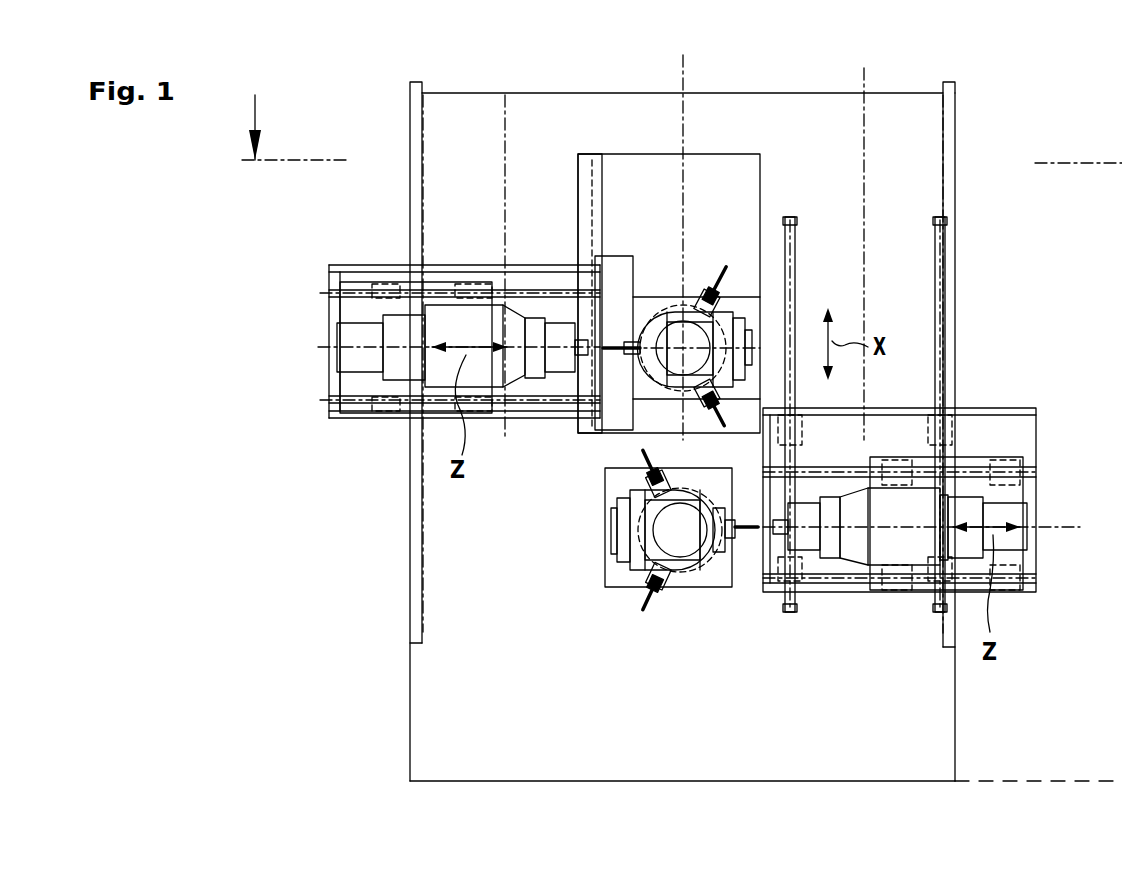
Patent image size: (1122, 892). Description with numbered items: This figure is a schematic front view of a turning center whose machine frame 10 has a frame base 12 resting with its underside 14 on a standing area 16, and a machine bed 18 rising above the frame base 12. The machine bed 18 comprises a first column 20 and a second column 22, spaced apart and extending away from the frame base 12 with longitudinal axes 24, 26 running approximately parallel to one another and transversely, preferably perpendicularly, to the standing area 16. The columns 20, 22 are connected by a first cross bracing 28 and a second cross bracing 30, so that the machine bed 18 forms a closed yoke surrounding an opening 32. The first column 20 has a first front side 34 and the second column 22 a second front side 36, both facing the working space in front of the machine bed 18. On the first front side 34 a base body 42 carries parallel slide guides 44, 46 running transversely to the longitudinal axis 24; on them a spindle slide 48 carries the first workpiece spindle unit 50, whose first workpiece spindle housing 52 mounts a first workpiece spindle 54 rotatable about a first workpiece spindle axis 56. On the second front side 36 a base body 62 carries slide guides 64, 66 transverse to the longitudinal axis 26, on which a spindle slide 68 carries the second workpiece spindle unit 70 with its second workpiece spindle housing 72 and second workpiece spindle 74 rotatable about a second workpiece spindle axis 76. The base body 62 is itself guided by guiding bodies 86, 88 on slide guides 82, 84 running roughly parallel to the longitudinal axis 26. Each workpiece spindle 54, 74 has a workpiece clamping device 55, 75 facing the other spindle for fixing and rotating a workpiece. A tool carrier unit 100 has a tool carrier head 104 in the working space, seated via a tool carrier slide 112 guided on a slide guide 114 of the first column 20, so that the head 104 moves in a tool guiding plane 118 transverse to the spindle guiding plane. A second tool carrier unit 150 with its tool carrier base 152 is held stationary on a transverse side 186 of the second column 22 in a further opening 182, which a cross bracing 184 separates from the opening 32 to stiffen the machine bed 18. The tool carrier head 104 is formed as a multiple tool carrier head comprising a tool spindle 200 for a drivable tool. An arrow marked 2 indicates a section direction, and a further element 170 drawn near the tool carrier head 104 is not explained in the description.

The section line of FIG. 2 is at (291, 127).
The machine frame 10 is at (970, 74).
The frame base 12 is at (930, 712).
The underside 14 is at (905, 783).
The standing area 16 is at (1088, 781).
The machine bed 18 is at (848, 131).
The first column 20 is at (465, 122).
The second column 22 is at (912, 132).
The longitudinal axis 24 is at (505, 153).
The longitudinal axis 26 is at (865, 156).
The first cross bracing 28 is at (658, 615).
The second cross bracing 30 is at (695, 140).
The opening 32 is at (723, 173).
The first front side 34 is at (458, 192).
The second front side 36 is at (925, 193).
The base body 42 is at (337, 278).
The slide guide 44 is at (336, 403).
The slide guide 46 is at (334, 295).
The spindle slide 48 is at (350, 383).
The first workpiece spindle unit 50 is at (438, 284).
The first workpiece spindle housing 52 is at (483, 338).
The first workpiece spindle 54 is at (558, 324).
The workpiece clamping device 55 is at (601, 358).
The first workpiece spindle axis 56 is at (348, 332).
The base body 62 is at (992, 430).
The slide guide 64 is at (1028, 468).
The slide guide 66 is at (1025, 592).
The spindle slide 68 is at (1003, 496).
The second workpiece spindle unit 70 is at (880, 550).
The second workpiece spindle housing 72 is at (925, 518).
The second workpiece spindle 74 is at (807, 540).
The workpiece clamping device 75 is at (750, 536).
The second workpiece spindle axis 76 is at (1073, 530).
The slide guide 82 is at (797, 223).
The slide guide 84 is at (947, 223).
The guiding body 86 is at (798, 425).
The guiding body 88 is at (950, 425).
The tool carrier unit 100 is at (657, 284).
The tool carrier head 104 is at (733, 307).
The tool carrier slide 112 is at (592, 212).
The slide guide 114 is at (584, 214).
The tool guiding plane 118 is at (683, 68).
The second tool carrier unit 150 is at (627, 575).
The tool carrier base 152 is at (725, 568).
The turret axis 170 is at (750, 298).
The opening 182 is at (613, 552).
The cross bracing 184 is at (618, 493).
The transverse side 186 is at (722, 466).
The tool spindle 200 is at (712, 567).